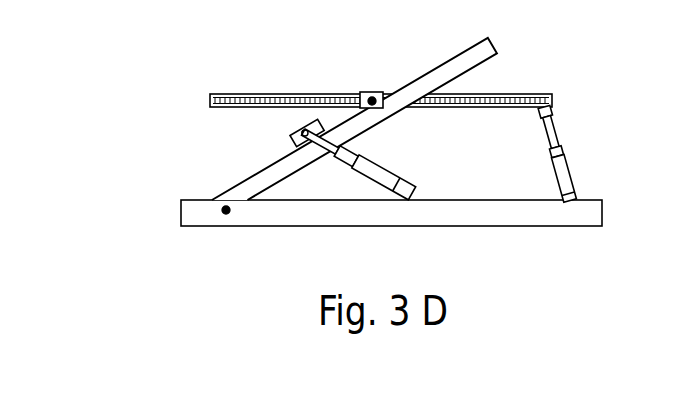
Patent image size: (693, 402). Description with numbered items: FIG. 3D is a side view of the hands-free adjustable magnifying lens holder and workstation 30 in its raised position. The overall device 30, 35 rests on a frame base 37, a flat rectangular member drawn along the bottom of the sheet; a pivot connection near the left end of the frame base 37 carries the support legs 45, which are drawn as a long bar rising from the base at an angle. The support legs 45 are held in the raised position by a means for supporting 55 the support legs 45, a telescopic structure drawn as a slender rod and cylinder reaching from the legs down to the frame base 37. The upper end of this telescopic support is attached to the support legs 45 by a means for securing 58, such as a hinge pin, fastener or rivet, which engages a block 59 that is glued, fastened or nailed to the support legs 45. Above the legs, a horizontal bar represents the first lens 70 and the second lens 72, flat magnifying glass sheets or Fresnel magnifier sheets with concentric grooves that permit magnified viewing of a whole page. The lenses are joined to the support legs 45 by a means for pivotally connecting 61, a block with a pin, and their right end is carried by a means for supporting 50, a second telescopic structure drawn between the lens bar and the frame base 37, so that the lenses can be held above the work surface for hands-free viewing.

The hands-free adjustable magnifying lens holder and workstation 30 is at (375, 180).
The support frame 35 is at (190, 302).
The frame base 37 is at (541, 208).
The support legs 45 is at (480, 52).
The means for supporting the lens frame 50 is at (578, 168).
The means for supporting the support legs 55 is at (362, 168).
The means for securing 58 is at (199, 145).
The block 59 is at (290, 137).
The means for pivotally connecting 61 is at (368, 92).
The lens No. 1 70 is at (381, 66).
The lens No. 2 72 is at (268, 92).